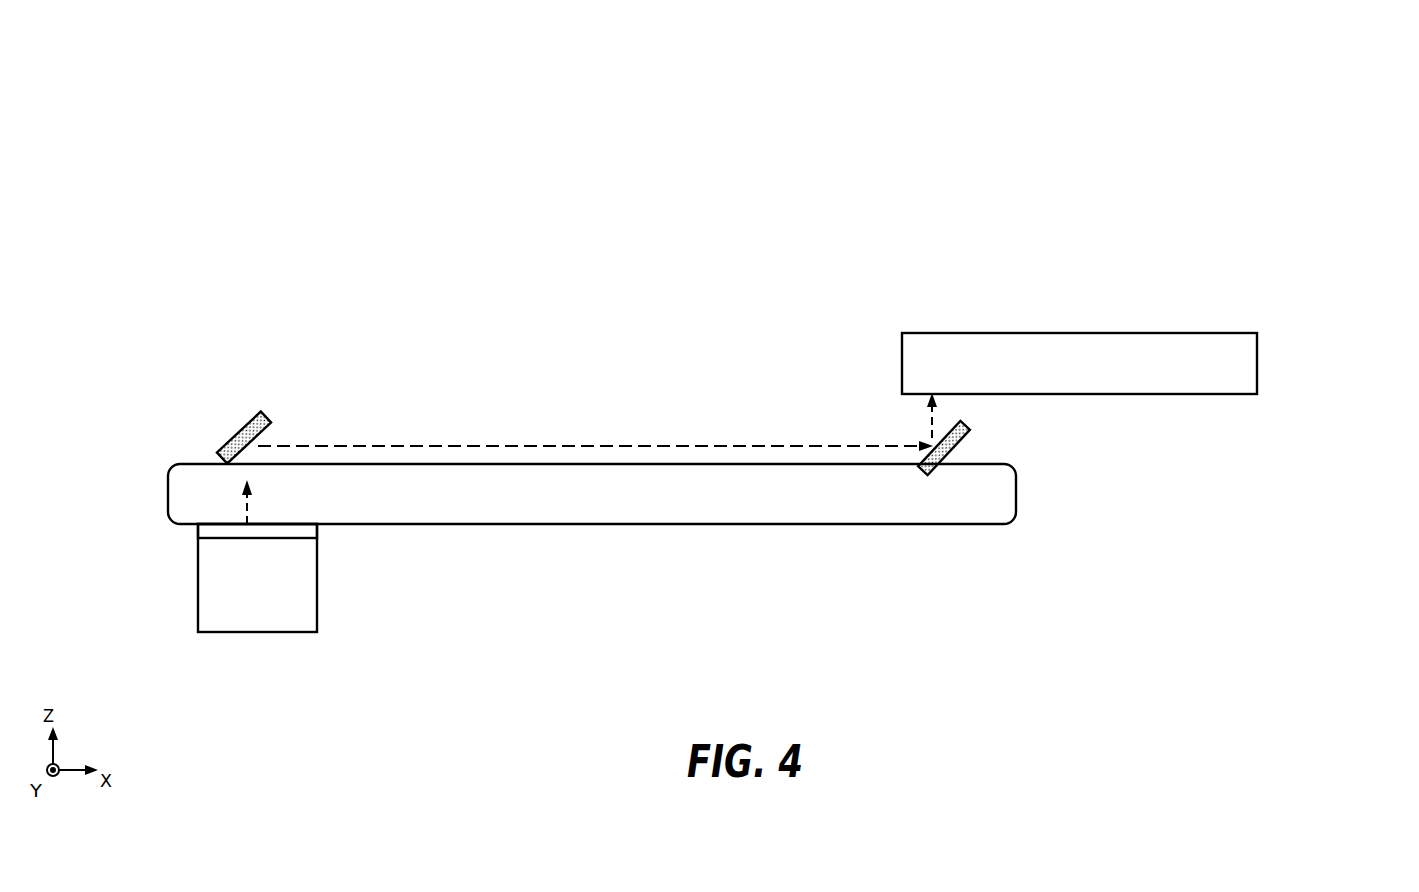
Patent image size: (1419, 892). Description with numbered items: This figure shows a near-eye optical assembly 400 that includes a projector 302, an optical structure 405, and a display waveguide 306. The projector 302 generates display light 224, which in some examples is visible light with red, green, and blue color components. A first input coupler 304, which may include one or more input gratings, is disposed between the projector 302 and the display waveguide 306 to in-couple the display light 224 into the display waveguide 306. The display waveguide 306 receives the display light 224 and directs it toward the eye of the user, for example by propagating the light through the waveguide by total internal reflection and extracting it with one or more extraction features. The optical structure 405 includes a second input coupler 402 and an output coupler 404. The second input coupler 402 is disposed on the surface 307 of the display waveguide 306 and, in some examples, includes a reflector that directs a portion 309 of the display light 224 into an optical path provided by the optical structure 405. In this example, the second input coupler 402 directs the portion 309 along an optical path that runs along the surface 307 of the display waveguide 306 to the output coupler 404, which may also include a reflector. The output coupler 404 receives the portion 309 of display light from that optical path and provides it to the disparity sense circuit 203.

The near-eye optical assembly 400 is at (1326, 115).
The disparity sense circuit 203 is at (1072, 348).
The display light 224 is at (255, 507).
The projector 302 is at (202, 627).
The first input coupler 304 is at (200, 534).
The display waveguide 306 is at (175, 480).
The surface 307 is at (526, 452).
The portion of the display light 309 is at (326, 443).
The second input coupler 402 is at (261, 412).
The output coupler 404 is at (969, 431).
The optical structure 405 is at (228, 334).